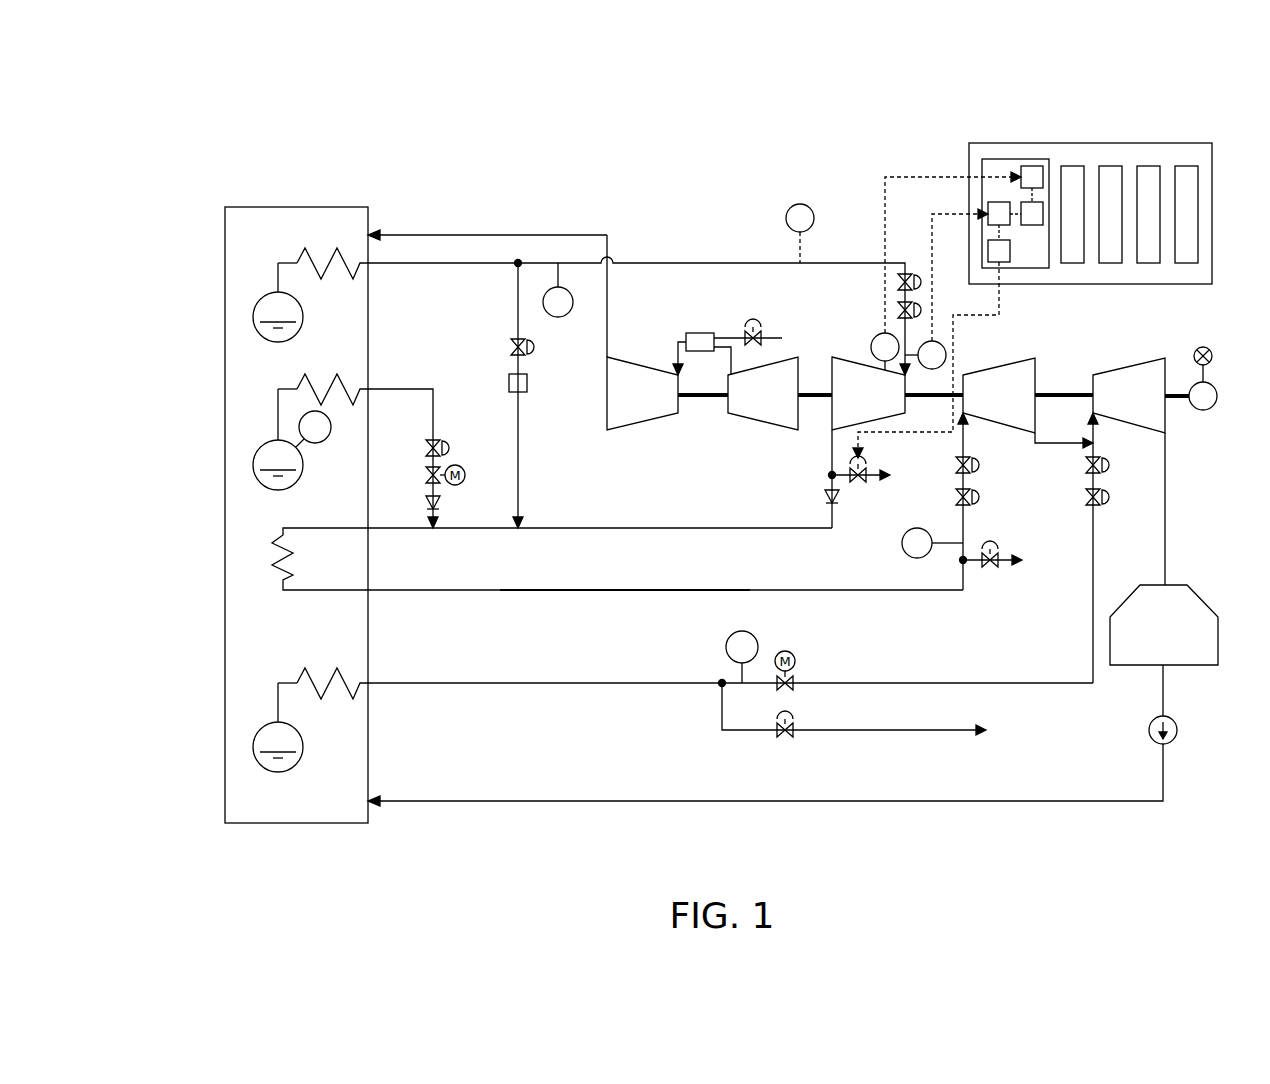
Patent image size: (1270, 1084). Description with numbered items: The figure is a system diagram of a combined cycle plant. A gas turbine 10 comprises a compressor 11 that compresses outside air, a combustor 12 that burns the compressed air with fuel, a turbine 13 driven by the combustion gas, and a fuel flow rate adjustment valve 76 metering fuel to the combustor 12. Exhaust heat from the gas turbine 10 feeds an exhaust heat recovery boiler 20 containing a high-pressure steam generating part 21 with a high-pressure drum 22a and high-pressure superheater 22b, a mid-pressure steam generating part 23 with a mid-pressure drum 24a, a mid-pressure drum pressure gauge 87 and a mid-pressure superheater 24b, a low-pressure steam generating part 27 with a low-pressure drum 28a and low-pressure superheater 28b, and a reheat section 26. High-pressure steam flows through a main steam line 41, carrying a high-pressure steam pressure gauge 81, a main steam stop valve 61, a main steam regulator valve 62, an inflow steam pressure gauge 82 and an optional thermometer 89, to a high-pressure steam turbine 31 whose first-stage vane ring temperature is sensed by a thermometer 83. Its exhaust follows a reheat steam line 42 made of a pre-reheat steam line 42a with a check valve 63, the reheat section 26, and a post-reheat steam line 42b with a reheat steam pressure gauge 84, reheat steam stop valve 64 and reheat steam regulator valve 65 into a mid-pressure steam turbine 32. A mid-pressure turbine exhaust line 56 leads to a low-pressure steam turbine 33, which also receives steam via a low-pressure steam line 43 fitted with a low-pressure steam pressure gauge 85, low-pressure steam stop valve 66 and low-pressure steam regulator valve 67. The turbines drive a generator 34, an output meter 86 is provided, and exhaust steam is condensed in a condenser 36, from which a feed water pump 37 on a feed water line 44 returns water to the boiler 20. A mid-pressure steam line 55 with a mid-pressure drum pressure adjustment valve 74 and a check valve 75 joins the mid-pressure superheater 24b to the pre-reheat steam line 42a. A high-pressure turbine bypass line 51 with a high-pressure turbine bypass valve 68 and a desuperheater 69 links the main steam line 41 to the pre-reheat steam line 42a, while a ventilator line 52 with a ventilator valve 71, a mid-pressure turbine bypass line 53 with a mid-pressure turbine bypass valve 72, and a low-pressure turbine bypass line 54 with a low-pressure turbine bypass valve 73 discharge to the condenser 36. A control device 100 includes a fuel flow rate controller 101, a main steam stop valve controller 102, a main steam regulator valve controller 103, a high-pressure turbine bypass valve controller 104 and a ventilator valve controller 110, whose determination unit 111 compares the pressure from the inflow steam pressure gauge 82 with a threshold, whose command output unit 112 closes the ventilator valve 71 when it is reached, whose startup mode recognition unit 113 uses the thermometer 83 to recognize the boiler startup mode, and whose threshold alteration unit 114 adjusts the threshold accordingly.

The gas turbine 10 is at (697, 434).
The compressor 11 is at (760, 422).
The combustor 12 is at (688, 333).
The turbine 13 is at (640, 422).
The exhaust heat recovery boiler 20 is at (228, 198).
The high-pressure steam generating part 21 is at (252, 288).
The high-pressure drum 22a is at (257, 305).
The high-pressure superheater 22b is at (300, 255).
The mid-pressure steam generating part 23 is at (252, 432).
The mid-pressure drum 24a is at (257, 455).
The mid-pressure superheater 24b is at (300, 385).
The reheat section 26 is at (262, 550).
The low-pressure steam generating part 27 is at (252, 713).
The low-pressure drum 28a is at (257, 750).
The low-pressure superheater 28b is at (305, 678).
The high-pressure steam turbine 31 is at (838, 360).
The mid-pressure steam turbine 32 is at (1035, 358).
The low-pressure steam turbine 33 is at (1165, 358).
The generator 34 is at (1215, 405).
The condenser 36 is at (1195, 585).
The feed water pump 37 is at (1178, 726).
The main steam line 41 is at (740, 263).
The reheat steam line 42 is at (572, 643).
The pre-reheat steam line 42a is at (598, 590).
The post-reheat steam line 42b is at (668, 590).
The low-pressure steam line 43 is at (548, 683).
The feed water line 44 is at (1000, 801).
The high-pressure turbine bypass line 51 is at (515, 280).
The ventilator line 52 is at (868, 485).
The mid-pressure turbine bypass line 53 is at (995, 570).
The low-pressure turbine bypass line 54 is at (820, 732).
The mid-pressure steam line 55 is at (410, 389).
The mid-pressure turbine exhaust line 56 is at (1050, 445).
The main steam stop valve 61 is at (898, 282).
The main steam regulator valve 62 is at (898, 310).
The check valve 63 is at (825, 497).
The reheat steam stop valve 64 is at (978, 497).
The reheat steam regulator valve 65 is at (978, 465).
The low-pressure steam stop valve 66 is at (1108, 497).
The low-pressure steam regulator valve 67 is at (1108, 465).
The high-pressure turbine bypass valve 68 is at (510, 347).
The desuperheater 69 is at (509, 383).
The ventilator valve 71 is at (858, 485).
The mid-pressure turbine bypass valve 72 is at (985, 570).
The low-pressure turbine bypass valve 73 is at (780, 740).
The mid-pressure drum pressure adjustment valve 74 is at (445, 448).
The check valve 75 is at (442, 503).
The fuel flow rate adjustment valve 76 is at (758, 325).
The high-pressure steam pressure gauge 81 is at (560, 318).
The inflow steam pressure gauge 82 is at (946, 350).
The thermometer 83 is at (874, 340).
The reheat steam pressure gauge 84 is at (905, 550).
The low-pressure steam pressure gauge 85 is at (755, 640).
The output meter 86 is at (1210, 348).
The mid-pressure drum pressure gauge 87 is at (319, 445).
The thermometer 89 is at (795, 205).
The control device 100 is at (963, 138).
The fuel flow rate controller 101 is at (1186, 166).
The main steam stop valve controller 102 is at (1148, 166).
The main steam regulator valve controller 103 is at (1110, 166).
The high-pressure turbine bypass valve controller 104 is at (1072, 166).
The ventilator valve controller 110 is at (1040, 159).
The determination unit 111 is at (988, 205).
The command output unit 112 is at (1010, 262).
The startup mode recognition unit 113 is at (1025, 166).
The threshold alteration unit 114 is at (1040, 202).